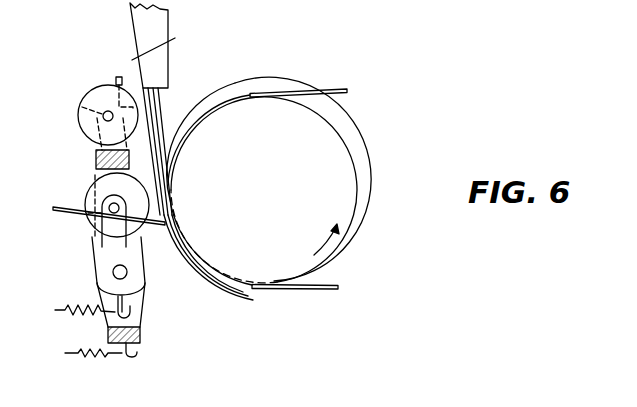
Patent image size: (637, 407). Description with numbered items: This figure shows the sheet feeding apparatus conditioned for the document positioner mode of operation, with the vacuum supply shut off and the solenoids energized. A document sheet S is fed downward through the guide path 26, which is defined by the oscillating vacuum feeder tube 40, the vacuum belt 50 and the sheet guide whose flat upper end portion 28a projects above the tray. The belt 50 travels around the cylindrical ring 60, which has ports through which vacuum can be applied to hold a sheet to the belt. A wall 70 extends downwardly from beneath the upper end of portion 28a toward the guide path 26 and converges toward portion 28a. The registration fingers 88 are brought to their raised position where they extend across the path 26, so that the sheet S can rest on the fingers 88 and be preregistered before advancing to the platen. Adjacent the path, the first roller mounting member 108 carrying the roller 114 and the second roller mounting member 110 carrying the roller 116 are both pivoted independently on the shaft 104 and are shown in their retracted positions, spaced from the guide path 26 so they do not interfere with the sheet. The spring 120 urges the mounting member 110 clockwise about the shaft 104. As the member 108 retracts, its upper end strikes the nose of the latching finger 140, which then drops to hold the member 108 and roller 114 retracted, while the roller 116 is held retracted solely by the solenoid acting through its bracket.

The upper end portion of sheet guide 28a is at (175, 38).
The wall 70 is at (168, 67).
The document sheet S is at (161, 110).
The latching finger 140 is at (117, 78).
The first roller mounting member 108 is at (82, 101).
The roller 114 is at (80, 124).
The roller 116 is at (86, 188).
The shaft 104 is at (112, 272).
The registration finger 88 is at (165, 225).
The spring 120 is at (72, 308).
The second roller mounting member 110 is at (88, 355).
The vacuum belt 50 is at (338, 90).
The oscillating vacuum feeder tube 40 is at (374, 167).
The cylindrical ring 60 is at (357, 196).
The guide path 26 is at (170, 157).